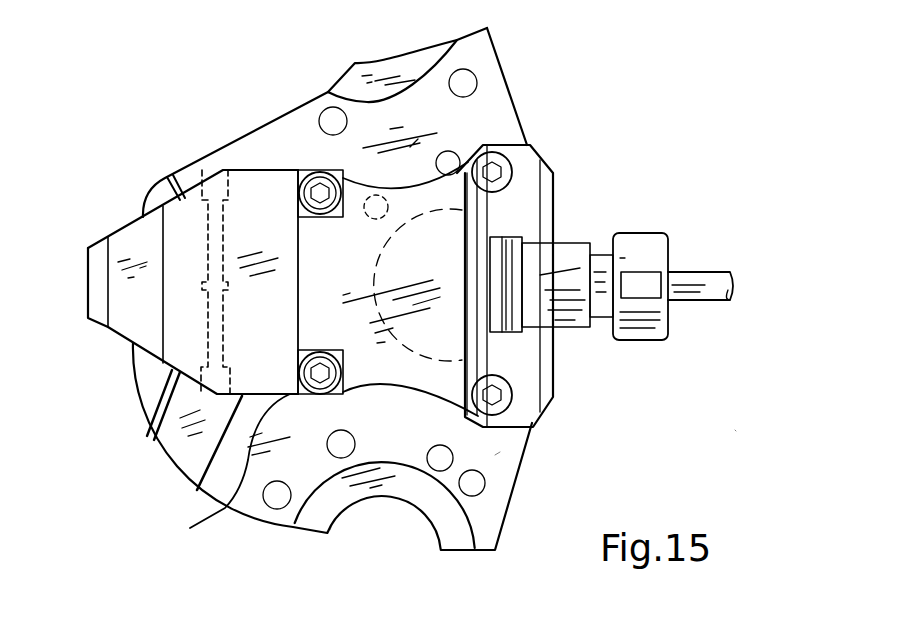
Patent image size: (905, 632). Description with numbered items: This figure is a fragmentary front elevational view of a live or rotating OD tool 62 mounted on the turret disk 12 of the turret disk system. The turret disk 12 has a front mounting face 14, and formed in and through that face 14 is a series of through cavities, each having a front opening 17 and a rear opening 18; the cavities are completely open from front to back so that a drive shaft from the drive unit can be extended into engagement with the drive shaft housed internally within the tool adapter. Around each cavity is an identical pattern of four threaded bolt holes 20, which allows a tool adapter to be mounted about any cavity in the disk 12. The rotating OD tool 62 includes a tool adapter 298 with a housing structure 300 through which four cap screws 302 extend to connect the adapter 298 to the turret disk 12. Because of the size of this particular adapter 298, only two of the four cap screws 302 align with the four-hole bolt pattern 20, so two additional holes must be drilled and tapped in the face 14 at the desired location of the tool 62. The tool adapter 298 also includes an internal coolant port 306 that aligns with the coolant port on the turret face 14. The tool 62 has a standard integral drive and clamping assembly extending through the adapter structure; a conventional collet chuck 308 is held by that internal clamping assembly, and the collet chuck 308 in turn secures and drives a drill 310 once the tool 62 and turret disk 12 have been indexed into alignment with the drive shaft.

The turret disk 12 is at (520, 510).
The front mounting face 14 is at (493, 452).
The front opening 17 is at (390, 465).
The rear opening 18 is at (427, 522).
The bolt hole 20 is at (273, 500).
The rotating OD tool 62 is at (680, 180).
The tool adapter 298 is at (756, 438).
The housing structure 300 is at (257, 330).
The cap screws 302 is at (297, 193).
The internal coolant port 306 is at (380, 193).
The collet chuck 308 is at (648, 250).
The drill 310 is at (710, 280).